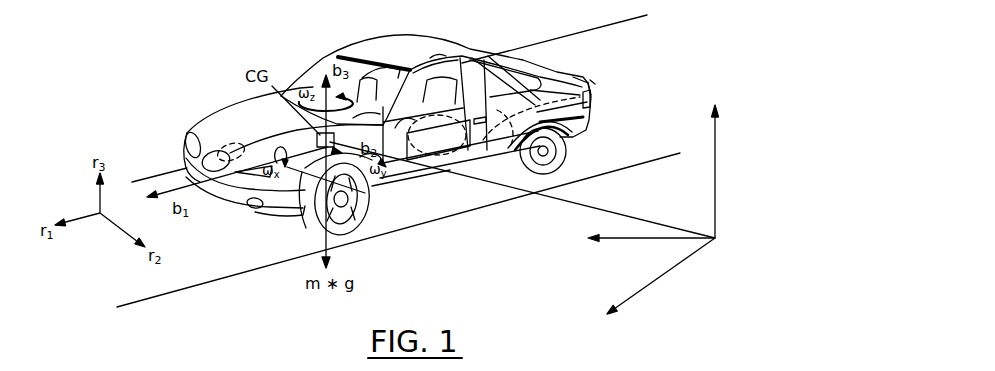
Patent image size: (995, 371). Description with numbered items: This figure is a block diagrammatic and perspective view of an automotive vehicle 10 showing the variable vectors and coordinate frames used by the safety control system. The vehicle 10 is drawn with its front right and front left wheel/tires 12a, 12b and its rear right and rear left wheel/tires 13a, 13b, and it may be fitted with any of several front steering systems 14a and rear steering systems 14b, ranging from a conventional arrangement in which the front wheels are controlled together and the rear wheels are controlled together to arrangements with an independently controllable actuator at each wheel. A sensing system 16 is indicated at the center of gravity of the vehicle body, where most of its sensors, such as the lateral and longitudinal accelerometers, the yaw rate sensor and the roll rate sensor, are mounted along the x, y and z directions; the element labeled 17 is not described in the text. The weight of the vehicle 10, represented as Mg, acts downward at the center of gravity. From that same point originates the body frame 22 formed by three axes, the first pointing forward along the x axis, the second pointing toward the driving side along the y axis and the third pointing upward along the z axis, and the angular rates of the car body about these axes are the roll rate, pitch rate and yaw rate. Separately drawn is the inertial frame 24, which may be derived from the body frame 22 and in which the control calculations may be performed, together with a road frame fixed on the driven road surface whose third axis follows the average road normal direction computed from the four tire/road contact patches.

The automotive vehicle 10 is at (400, 48).
The front right wheel/tire 12a is at (192, 126).
The front left wheel/tire 12b is at (366, 205).
The rear right wheel/tire 13a is at (438, 58).
The rear left wheel/tire 13b is at (562, 153).
The front steering system 14a is at (298, 187).
The rear steering system 14b is at (593, 80).
The sensing system 16 is at (330, 155).
The controller 17 is at (473, 57).
The body frame 22 is at (172, 190).
The inertial frame 24 is at (717, 240).